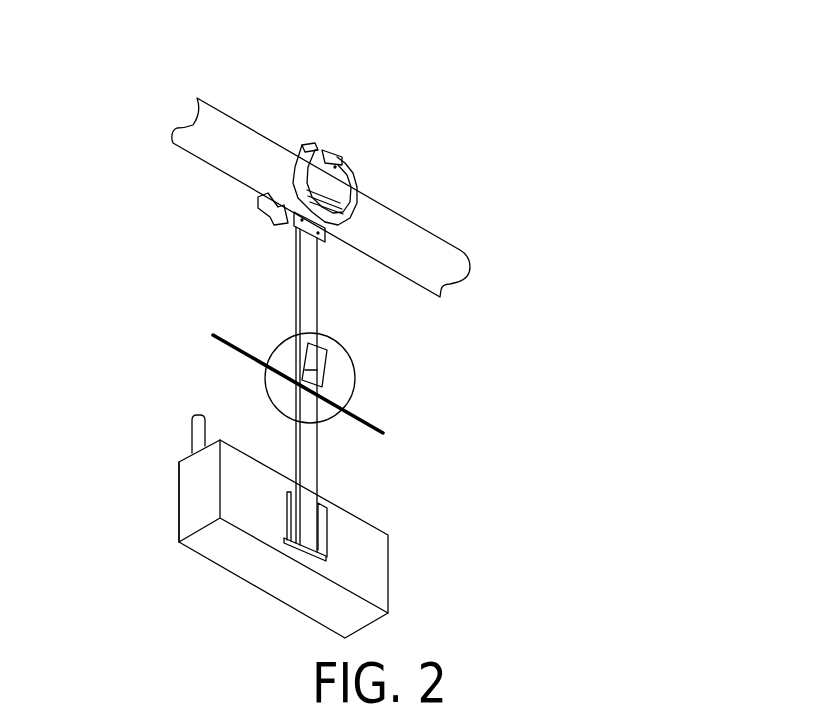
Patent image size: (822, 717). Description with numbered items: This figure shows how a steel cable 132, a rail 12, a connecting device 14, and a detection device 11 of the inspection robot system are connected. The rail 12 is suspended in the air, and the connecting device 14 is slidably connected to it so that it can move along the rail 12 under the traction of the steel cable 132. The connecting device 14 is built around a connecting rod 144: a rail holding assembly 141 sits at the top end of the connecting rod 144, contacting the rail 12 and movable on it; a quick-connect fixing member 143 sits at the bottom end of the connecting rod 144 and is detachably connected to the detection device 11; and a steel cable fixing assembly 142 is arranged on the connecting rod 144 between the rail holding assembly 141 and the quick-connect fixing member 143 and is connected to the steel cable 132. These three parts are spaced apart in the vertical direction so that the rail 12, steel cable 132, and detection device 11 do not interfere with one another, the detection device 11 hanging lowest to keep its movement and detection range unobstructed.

The detection device 11 is at (200, 515).
The rail 12 is at (253, 152).
The connecting device 14 is at (572, 587).
The steel cable 132 is at (210, 337).
The rail holding assembly 141 is at (357, 178).
The steel cable fixing assembly 142 is at (323, 378).
The quick-connect fixing member 143 is at (325, 560).
The connecting rod 144 is at (310, 308).